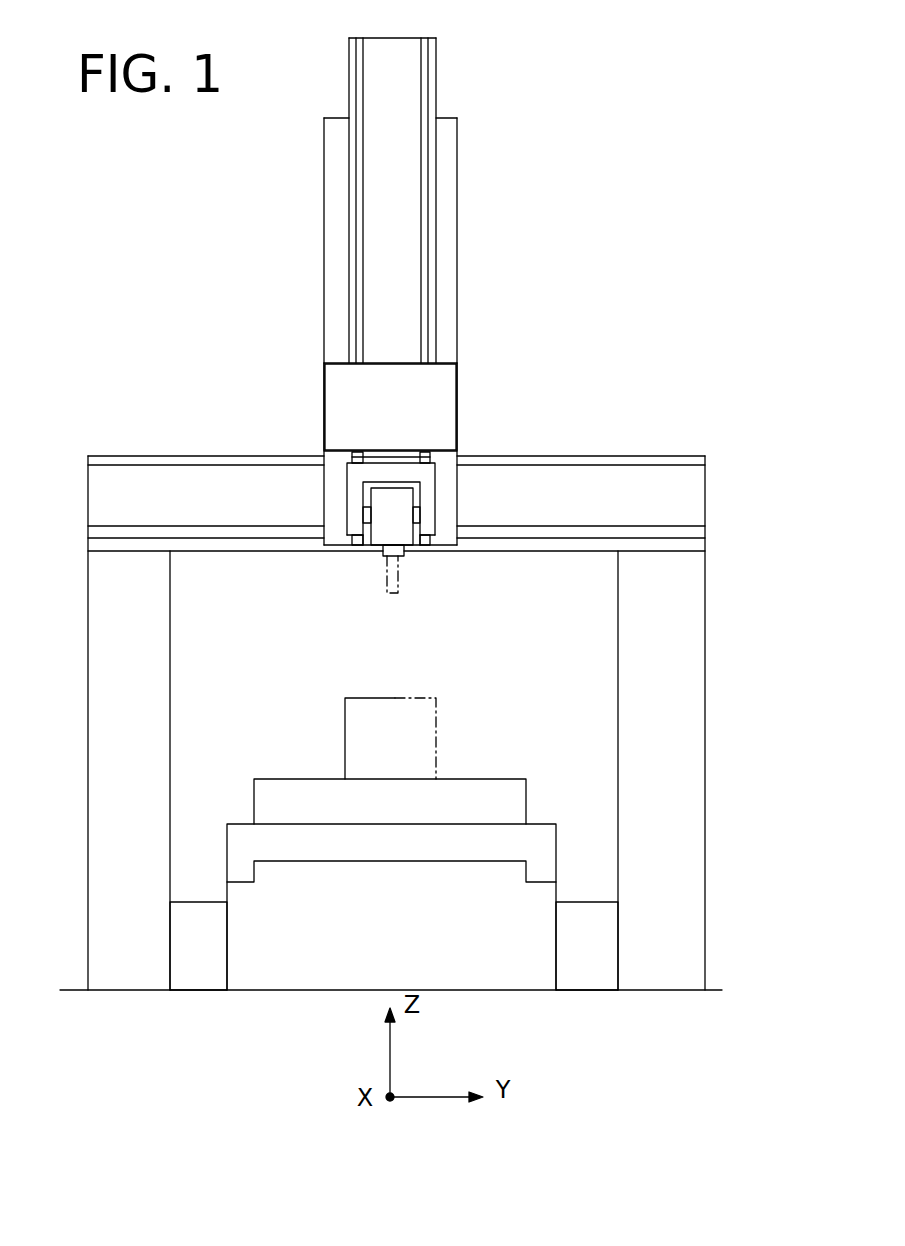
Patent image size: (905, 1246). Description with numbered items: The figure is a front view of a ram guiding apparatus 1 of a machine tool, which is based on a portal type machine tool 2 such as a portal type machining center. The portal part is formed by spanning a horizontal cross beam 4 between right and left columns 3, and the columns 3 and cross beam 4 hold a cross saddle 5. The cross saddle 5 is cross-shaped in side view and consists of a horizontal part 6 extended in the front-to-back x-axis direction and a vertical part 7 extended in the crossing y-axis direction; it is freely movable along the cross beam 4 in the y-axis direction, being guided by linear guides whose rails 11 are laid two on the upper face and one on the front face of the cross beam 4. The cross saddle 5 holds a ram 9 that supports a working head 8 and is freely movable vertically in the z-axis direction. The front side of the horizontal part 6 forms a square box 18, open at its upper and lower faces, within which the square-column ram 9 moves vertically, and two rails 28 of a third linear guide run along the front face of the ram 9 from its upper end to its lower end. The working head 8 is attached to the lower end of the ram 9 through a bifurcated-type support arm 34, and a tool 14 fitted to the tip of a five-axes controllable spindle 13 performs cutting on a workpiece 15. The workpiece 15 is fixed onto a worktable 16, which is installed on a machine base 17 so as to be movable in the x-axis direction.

The ram guiding apparatus 1 is at (264, 391).
The portal type machine tool 2 is at (720, 833).
The columns 3 is at (88, 810).
The cross beam 4 is at (697, 499).
The cross saddle 5 is at (458, 361).
The horizontal part 6 is at (324, 418).
The vertical part 7 is at (324, 182).
The working head 8 is at (410, 498).
The ram 9 is at (440, 163).
The rail 11 is at (712, 458).
The spindle 13 is at (405, 556).
The tool 14 is at (387, 587).
The workpiece 15 is at (358, 696).
The worktable 16 is at (494, 778).
The machine base 17 is at (240, 892).
The box 18 is at (446, 411).
The rails 28 is at (421, 310).
The bifurcated-type support arm 34 is at (348, 492).